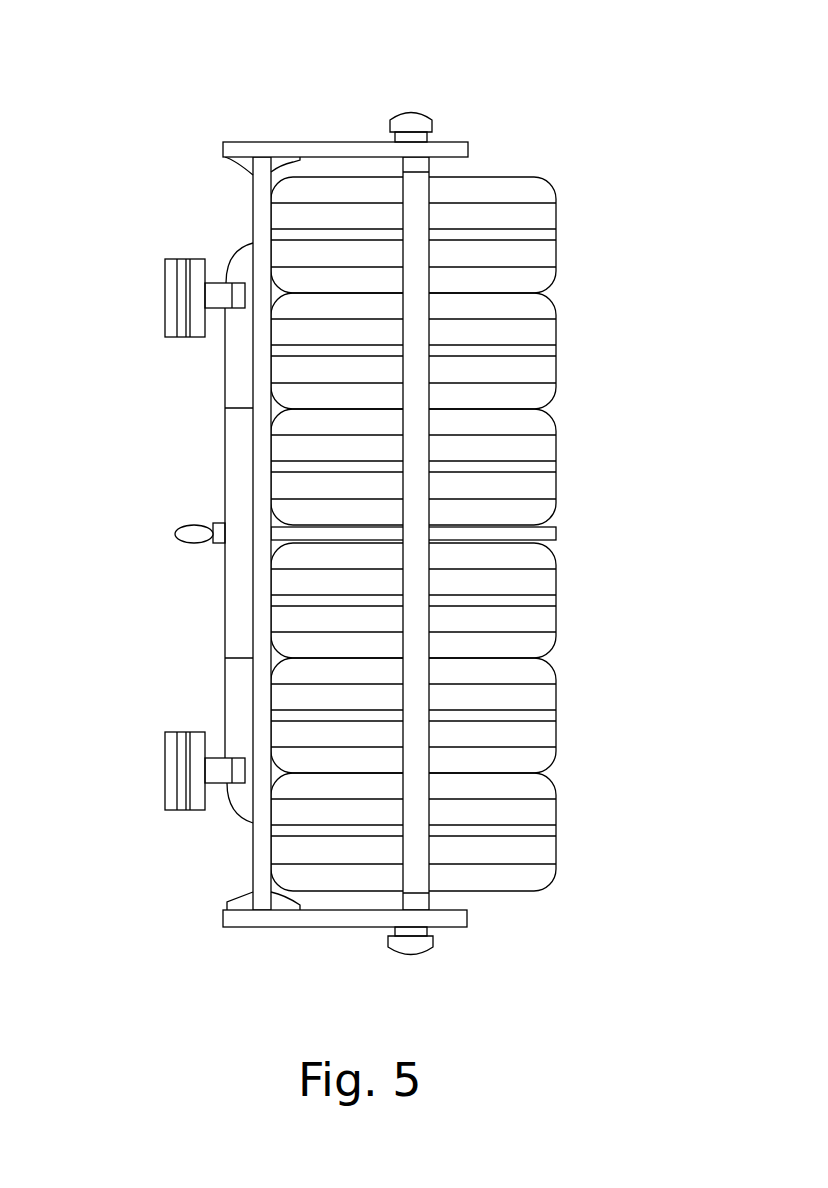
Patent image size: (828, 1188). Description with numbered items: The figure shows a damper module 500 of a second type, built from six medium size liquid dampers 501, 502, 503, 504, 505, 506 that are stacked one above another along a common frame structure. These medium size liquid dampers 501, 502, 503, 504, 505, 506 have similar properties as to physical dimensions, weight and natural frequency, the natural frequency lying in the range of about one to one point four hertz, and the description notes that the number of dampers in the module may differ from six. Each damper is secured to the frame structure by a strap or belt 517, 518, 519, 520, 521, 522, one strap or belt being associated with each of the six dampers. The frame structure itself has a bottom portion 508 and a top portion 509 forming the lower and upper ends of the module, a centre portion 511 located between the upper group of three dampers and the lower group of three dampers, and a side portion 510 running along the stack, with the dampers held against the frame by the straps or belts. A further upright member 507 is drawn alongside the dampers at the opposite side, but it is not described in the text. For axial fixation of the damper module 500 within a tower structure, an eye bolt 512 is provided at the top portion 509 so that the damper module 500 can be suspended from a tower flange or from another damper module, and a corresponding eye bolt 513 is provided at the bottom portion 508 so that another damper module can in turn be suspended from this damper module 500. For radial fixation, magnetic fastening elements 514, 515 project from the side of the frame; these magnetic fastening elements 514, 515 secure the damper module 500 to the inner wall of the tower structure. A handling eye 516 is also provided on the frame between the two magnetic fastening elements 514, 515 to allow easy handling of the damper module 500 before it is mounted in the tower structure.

The damper module 500 is at (609, 105).
The medium size liquid damper 501 is at (541, 216).
The medium size liquid damper 502 is at (545, 330).
The medium size liquid damper 503 is at (543, 446).
The medium size liquid damper 504 is at (542, 582).
The medium size liquid damper 505 is at (543, 698).
The medium size liquid damper 506 is at (538, 815).
The side support column 507 is at (260, 857).
The bottom portion 508 is at (305, 918).
The top portion 509 is at (342, 143).
The side portion 510 is at (420, 873).
The centre portion 511 is at (288, 532).
The eye bolt 512 is at (428, 117).
The eye bolt 513 is at (420, 955).
The magnetic fastening element 514 is at (178, 297).
The magnetic fastening element 515 is at (175, 779).
The handling eye 516 is at (180, 525).
The strap or belt 517 is at (546, 238).
The strap or belt 518 is at (547, 354).
The strap or belt 519 is at (547, 470).
The strap or belt 520 is at (547, 603).
The strap or belt 521 is at (547, 717).
The strap or belt 522 is at (547, 833).